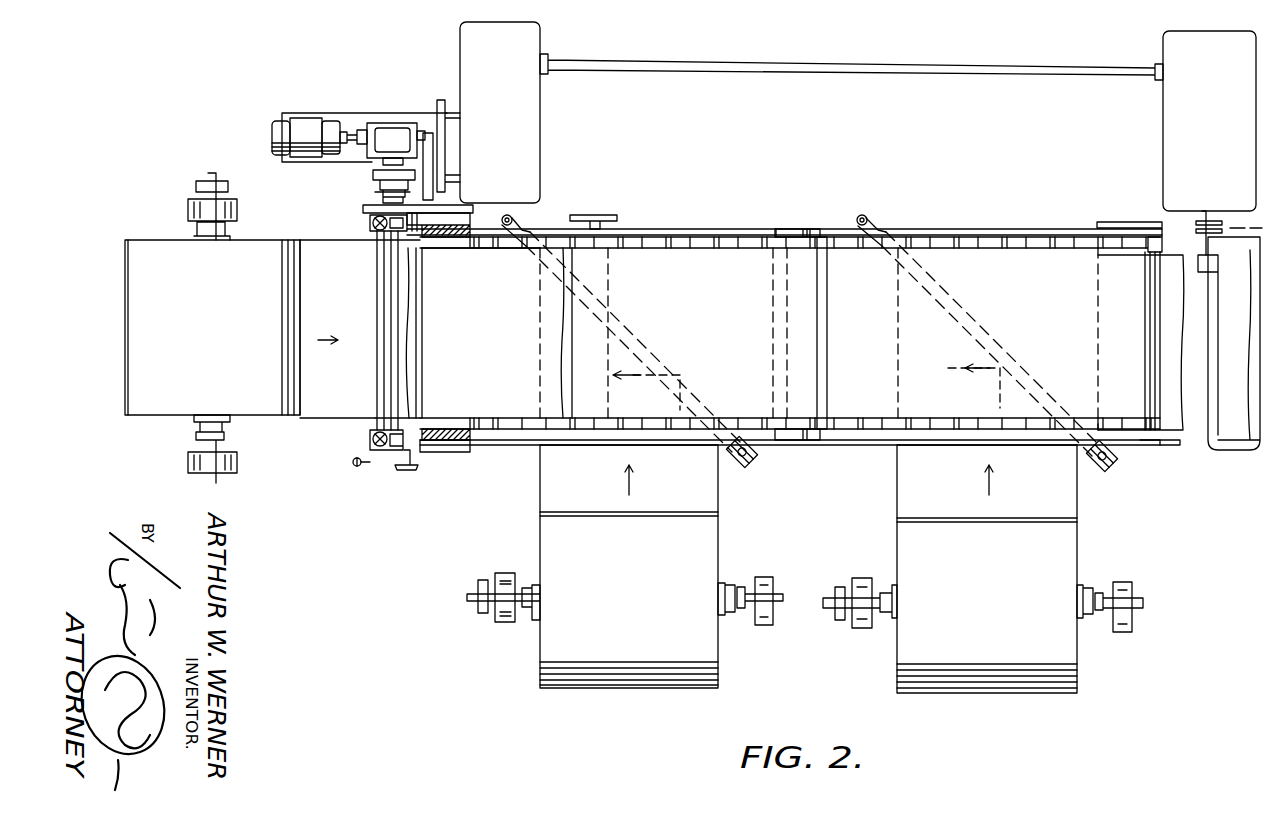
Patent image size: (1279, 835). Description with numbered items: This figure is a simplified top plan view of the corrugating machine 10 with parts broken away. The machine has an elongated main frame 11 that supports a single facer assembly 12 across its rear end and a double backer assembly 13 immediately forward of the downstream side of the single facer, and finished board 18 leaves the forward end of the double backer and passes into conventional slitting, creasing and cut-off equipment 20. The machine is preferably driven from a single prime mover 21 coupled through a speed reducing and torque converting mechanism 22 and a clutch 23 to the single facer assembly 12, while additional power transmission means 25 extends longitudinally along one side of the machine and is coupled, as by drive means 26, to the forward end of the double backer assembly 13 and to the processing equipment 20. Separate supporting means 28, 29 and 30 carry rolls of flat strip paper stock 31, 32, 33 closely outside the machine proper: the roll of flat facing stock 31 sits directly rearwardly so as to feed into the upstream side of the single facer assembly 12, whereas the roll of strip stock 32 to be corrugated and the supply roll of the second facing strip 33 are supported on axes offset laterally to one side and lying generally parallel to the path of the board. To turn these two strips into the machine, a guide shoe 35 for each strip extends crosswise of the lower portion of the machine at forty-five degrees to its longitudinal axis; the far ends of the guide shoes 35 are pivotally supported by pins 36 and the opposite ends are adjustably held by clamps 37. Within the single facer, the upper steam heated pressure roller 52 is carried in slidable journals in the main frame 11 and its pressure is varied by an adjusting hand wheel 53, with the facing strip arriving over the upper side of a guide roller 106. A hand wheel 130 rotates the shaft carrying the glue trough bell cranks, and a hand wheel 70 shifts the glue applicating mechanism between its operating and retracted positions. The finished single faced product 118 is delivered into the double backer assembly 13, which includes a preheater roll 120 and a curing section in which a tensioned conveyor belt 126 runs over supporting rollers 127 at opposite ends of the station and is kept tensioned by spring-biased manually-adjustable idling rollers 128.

The corrugating machine 10 is at (399, 520).
The main frame 11 is at (668, 226).
The single facer assembly 12 is at (364, 226).
The double backer assembly 13 is at (815, 214).
The finished board 18 is at (1176, 430).
The slitting, creasing and cut-off equipment 20 is at (1244, 458).
The prime mover 21 is at (303, 125).
The speed reducing and torque converting mechanism 22 is at (395, 128).
The clutch 23 is at (372, 176).
The power transmission means 25 is at (770, 66).
The drive means 26 is at (1195, 228).
The roll supporting means 28 is at (190, 207).
The roll supporting means 29 is at (504, 578).
The roll supporting means 30 is at (862, 630).
The roll of flat facing stock 31 is at (310, 416).
The roll of strip stock to be corrugated 32 is at (700, 507).
The supply roll of second facing strip 33 is at (900, 502).
The guide shoe 35 is at (520, 215).
The pin 36 is at (507, 214).
The clamp 37 is at (752, 459).
The pressure roller 52 is at (402, 383).
The adjusting hand wheel 53 is at (378, 232).
The hand wheel 70 is at (412, 468).
The guide roller 106 is at (375, 427).
The finished single faced product 118 is at (416, 398).
The preheater roll 120 is at (445, 243).
The tensioned conveyor belt 126 is at (811, 333).
The supporting roller 127 is at (608, 289).
The idling roller 128 is at (773, 289).
The hand wheel 130 is at (357, 466).